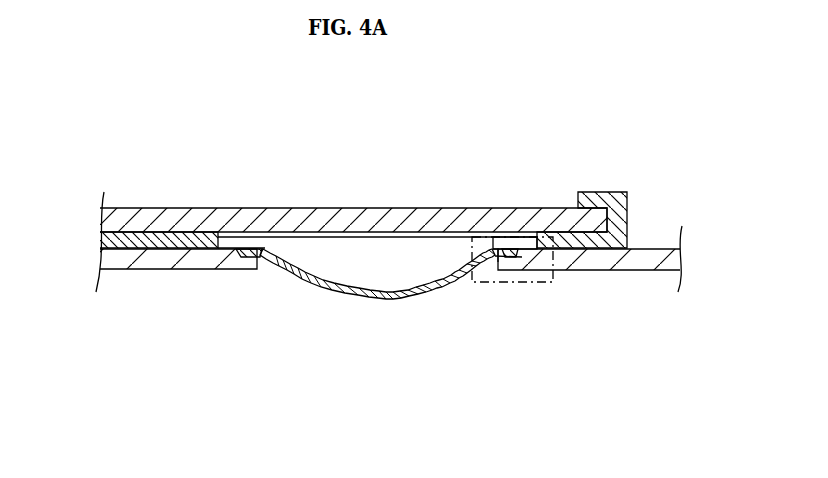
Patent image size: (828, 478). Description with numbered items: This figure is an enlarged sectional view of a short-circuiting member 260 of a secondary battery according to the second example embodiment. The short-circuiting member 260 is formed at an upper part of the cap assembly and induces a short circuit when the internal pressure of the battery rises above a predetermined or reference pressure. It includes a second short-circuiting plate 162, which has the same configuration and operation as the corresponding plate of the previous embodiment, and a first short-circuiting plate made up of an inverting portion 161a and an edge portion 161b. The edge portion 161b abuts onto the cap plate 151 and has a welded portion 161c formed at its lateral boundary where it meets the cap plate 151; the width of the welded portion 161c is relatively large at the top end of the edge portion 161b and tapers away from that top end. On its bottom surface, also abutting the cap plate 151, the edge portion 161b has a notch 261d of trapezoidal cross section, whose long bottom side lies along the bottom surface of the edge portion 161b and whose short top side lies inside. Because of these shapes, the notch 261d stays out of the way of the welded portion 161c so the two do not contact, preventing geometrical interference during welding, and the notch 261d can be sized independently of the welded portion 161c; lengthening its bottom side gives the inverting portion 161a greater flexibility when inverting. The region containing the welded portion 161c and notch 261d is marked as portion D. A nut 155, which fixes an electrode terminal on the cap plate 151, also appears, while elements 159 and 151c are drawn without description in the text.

The short-circuiting member 260 is at (364, 162).
The second short-circuiting plate 162 is at (290, 222).
The nut 155 is at (170, 243).
The frame hook member 159 is at (606, 192).
The cap plate 151 is at (655, 265).
The recess of housing 151c is at (483, 258).
The inverting portion 161a is at (441, 294).
The edge portion 161b is at (500, 248).
The welded portion 161c is at (533, 256).
The notch 261d is at (507, 258).
The portion D is at (482, 284).